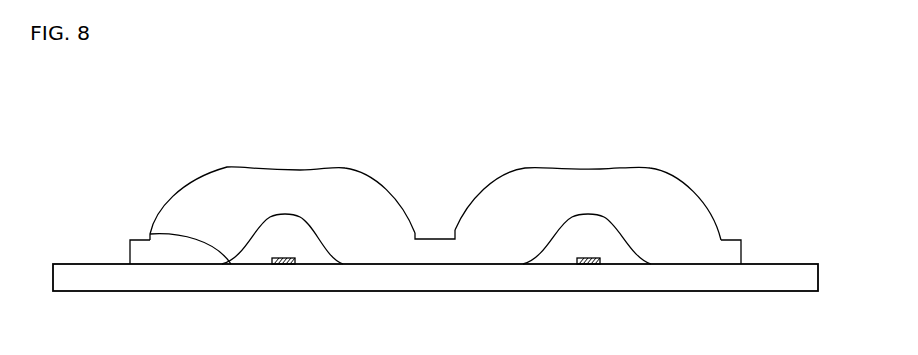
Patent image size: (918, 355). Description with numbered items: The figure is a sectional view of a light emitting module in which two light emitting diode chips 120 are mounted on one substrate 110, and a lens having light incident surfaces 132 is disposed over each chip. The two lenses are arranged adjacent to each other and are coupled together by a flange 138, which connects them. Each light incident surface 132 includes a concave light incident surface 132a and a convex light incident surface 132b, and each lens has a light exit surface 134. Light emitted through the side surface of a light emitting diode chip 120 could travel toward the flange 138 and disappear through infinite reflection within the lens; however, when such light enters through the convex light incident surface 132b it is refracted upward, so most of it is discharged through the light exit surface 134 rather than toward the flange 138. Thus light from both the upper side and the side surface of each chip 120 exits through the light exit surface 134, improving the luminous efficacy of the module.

The substrate 110 is at (813, 275).
The light emitting diode chip 120 is at (287, 264).
The light incident surface 132 is at (270, 214).
The concave light incident surface 132a is at (263, 225).
The convex light incident surface 132b is at (150, 233).
The light exit surface 134 is at (163, 200).
The flange 138 is at (437, 242).